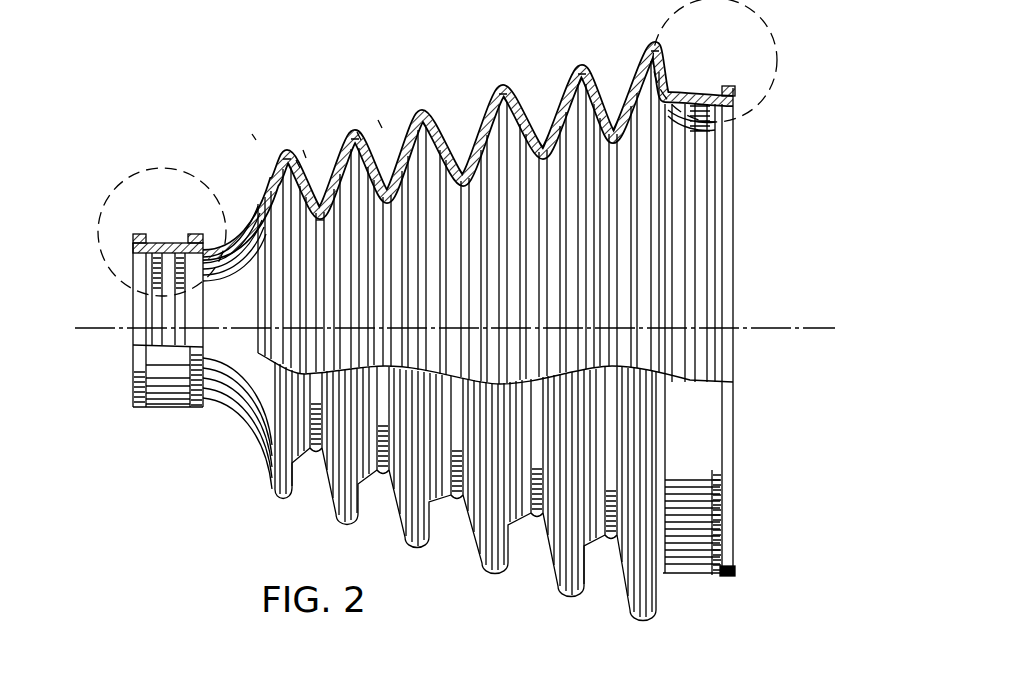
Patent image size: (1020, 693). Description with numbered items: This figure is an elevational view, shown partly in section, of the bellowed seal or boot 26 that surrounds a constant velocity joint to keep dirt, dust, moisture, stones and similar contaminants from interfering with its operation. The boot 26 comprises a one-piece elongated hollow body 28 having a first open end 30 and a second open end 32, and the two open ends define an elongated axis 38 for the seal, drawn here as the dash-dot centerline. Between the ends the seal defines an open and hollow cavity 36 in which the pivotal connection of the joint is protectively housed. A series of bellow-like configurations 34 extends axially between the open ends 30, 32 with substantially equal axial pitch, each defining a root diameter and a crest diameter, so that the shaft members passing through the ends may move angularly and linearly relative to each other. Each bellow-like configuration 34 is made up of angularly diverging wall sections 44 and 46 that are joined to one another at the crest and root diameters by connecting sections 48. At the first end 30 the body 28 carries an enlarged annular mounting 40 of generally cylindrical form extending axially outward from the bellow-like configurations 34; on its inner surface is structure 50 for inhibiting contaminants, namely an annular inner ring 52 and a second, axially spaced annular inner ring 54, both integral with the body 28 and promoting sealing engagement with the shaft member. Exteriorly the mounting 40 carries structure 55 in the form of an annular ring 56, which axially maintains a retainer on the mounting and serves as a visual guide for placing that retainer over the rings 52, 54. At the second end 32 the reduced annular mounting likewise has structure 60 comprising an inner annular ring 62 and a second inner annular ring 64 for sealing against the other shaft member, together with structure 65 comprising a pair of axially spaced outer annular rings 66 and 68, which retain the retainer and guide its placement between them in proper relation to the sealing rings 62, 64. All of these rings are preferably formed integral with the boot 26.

The bellowed seal or boot 26 is at (427, 64).
The one-piece elongated hollow body 28 is at (451, 116).
The first open end 30 is at (720, 98).
The second open end 32 is at (218, 212).
The bellow-like configurations 34 is at (652, 44).
The open and hollow cavity 36 is at (324, 130).
The elongated axis 38 is at (113, 323).
The enlarged annular mounting 40 is at (688, 545).
The angularly diverging wall section 44 is at (345, 127).
The angularly diverging wall section 46 is at (380, 128).
The connecting sections 48 is at (303, 147).
The structure for inhibiting contaminants 50 is at (722, 323).
The annular inner ring 52 is at (708, 283).
The second annular inner ring 54 is at (688, 257).
The structure for axially maintaining the retainer 55 is at (733, 586).
The annular ring 56 is at (725, 545).
The structure for inhibiting contaminants 60 is at (128, 320).
The inner annular ring 62 is at (158, 300).
The second annular inner ring 64 is at (188, 326).
The structure for axially retaining the retainer 65 is at (139, 422).
The outer annular ring 66 is at (133, 410).
The outer annular ring 68 is at (197, 412).